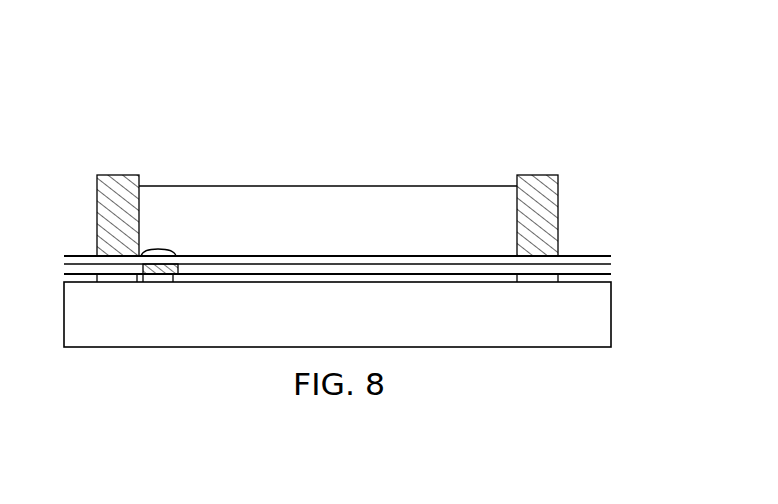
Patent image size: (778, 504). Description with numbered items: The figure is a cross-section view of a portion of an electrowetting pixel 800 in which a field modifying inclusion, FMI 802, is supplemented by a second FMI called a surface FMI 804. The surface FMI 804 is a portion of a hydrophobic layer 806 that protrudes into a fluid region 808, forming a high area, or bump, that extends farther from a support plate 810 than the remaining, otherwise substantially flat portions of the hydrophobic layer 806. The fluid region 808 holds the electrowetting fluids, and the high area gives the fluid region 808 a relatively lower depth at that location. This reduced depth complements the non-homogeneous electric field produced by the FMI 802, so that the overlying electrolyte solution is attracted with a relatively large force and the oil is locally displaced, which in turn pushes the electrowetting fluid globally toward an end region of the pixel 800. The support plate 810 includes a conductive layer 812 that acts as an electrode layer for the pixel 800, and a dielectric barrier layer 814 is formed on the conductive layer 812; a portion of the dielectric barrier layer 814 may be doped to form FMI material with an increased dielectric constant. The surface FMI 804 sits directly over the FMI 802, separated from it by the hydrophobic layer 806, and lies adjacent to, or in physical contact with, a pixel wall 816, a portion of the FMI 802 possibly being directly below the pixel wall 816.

The electrowetting pixel 800 is at (617, 57).
The FMI 802 is at (173, 275).
The surface FMI 804 is at (153, 250).
The hydrophobic layer 806 is at (345, 257).
The fluid region 808 is at (273, 235).
The support plate 810 is at (251, 323).
The conductive layer 812 is at (78, 282).
The dielectric barrier layer 814 is at (293, 264).
The pixel wall 816 is at (97, 228).